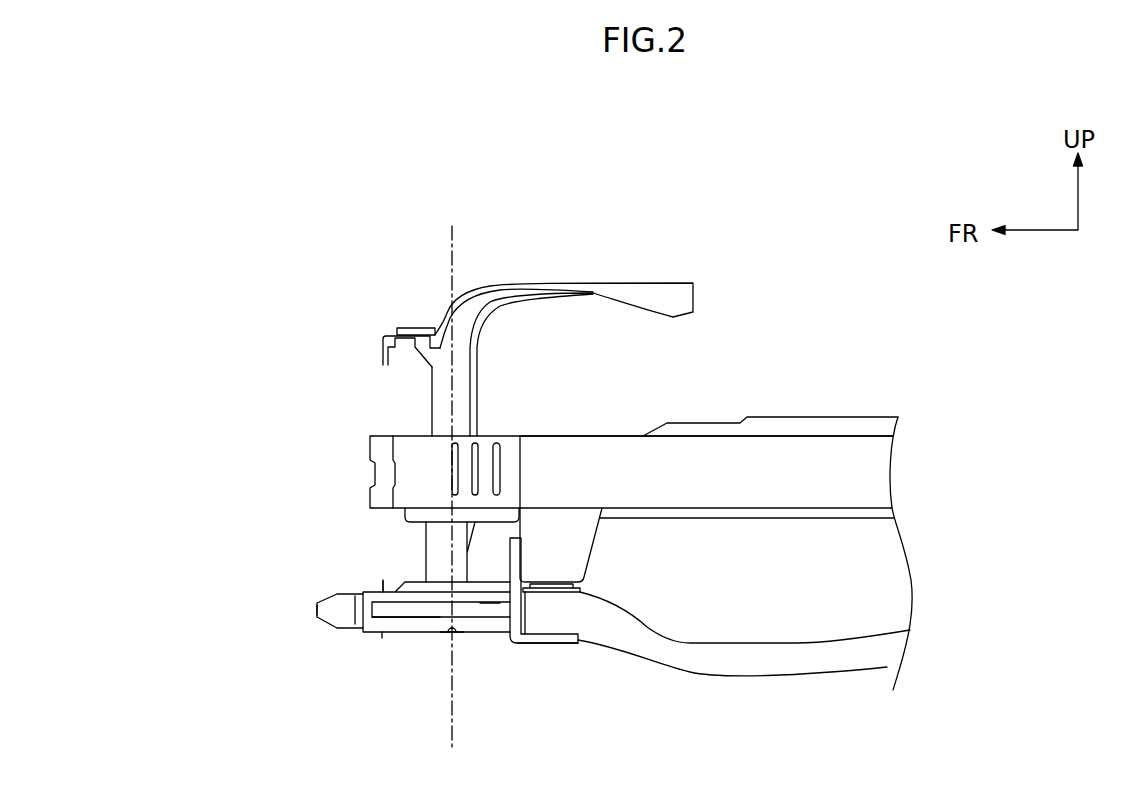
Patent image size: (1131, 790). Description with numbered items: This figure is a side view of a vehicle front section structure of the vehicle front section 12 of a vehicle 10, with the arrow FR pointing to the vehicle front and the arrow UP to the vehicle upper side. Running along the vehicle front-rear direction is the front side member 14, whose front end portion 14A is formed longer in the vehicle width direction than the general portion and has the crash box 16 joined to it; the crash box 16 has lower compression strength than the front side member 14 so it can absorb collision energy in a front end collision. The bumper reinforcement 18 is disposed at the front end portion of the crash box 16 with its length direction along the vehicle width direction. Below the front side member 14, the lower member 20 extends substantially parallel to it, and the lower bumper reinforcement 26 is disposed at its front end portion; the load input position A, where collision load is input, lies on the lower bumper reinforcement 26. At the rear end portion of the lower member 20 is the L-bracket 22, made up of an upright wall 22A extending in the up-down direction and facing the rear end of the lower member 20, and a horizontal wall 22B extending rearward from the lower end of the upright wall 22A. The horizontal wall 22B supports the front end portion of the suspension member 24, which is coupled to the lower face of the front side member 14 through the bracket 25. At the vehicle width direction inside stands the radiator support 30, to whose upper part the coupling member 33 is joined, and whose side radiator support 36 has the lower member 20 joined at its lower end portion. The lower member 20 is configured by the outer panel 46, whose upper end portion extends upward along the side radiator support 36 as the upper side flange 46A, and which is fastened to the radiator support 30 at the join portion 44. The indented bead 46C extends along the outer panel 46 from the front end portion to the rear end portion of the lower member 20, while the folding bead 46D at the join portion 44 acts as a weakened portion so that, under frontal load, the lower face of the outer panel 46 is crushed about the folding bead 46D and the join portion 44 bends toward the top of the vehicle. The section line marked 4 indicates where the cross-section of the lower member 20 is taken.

The vehicle 10 is at (410, 352).
The vehicle front section 12 is at (330, 312).
The front side member 14 is at (753, 412).
The front end portion 14A is at (585, 436).
The crash box 16 is at (490, 436).
The bumper reinforcement 18 is at (367, 448).
The lower member 20 is at (382, 609).
The L-bracket 22 is at (568, 650).
The upright wall 22A is at (527, 610).
The horizontal wall 22B is at (552, 648).
The suspension member 24 is at (795, 672).
The bracket 25 is at (600, 528).
The lower bumper reinforcement 26 is at (343, 630).
The radiator support 30 is at (428, 403).
The coupling member 33 is at (657, 283).
The side radiator support 36 is at (425, 540).
The join portion 44 is at (476, 652).
The outer panel 46 is at (403, 635).
The upper side flange 46A is at (418, 578).
The indented bead 46C is at (482, 618).
The folding bead 46D is at (450, 630).
The section line 4- 4 is at (462, 742).
The load input position A is at (316, 612).